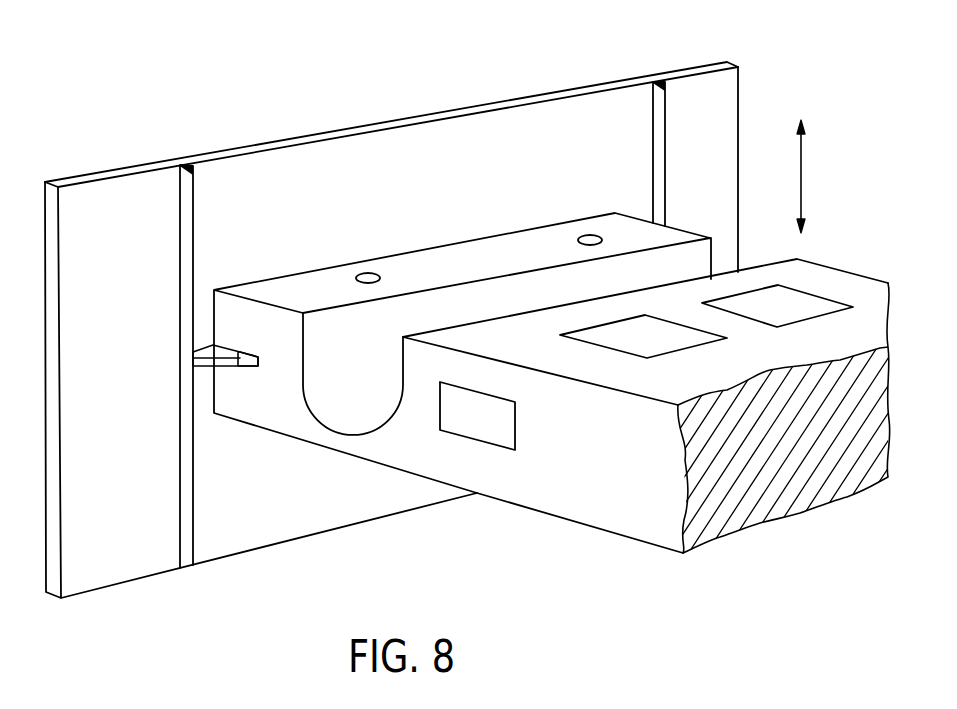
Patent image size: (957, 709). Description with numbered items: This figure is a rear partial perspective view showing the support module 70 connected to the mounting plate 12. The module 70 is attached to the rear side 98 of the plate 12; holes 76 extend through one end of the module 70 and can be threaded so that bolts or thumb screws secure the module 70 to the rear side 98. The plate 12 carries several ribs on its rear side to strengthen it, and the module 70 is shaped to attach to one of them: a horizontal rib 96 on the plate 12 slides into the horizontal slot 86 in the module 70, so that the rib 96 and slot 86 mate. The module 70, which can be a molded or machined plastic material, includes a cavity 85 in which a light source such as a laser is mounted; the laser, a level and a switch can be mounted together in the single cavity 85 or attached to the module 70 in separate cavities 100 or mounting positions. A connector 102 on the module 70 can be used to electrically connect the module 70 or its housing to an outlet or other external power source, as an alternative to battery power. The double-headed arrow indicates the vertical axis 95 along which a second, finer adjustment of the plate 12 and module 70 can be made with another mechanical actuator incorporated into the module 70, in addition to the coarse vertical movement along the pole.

The mounting plate 12 is at (100, 190).
The rear side of the mounting plate 98 is at (268, 167).
The holes 76 is at (368, 273).
The cavity 85 is at (355, 405).
The rib 96 is at (205, 365).
The slot 86 is at (253, 368).
The support module 70 is at (627, 490).
The cavities 100 is at (720, 367).
The connector 102 is at (496, 414).
The vertical axis 95 is at (802, 173).